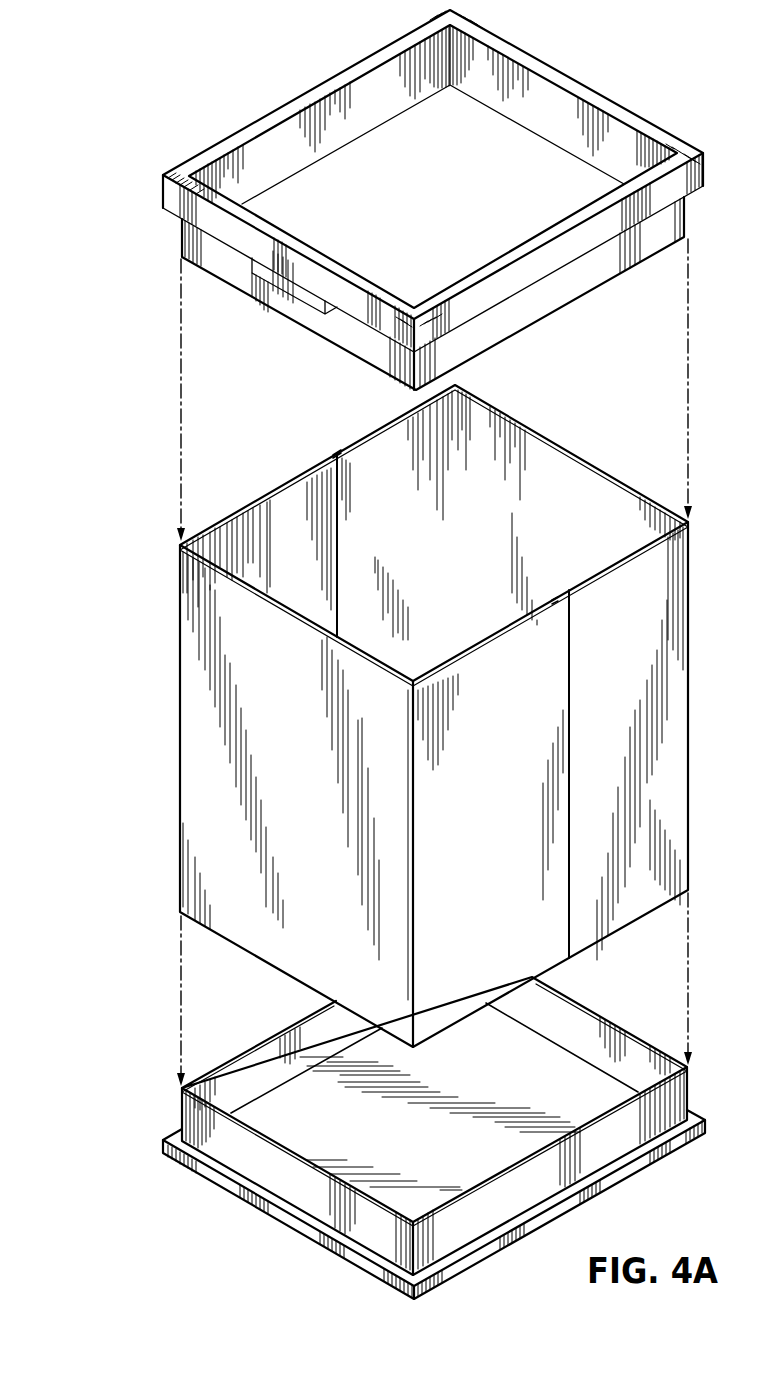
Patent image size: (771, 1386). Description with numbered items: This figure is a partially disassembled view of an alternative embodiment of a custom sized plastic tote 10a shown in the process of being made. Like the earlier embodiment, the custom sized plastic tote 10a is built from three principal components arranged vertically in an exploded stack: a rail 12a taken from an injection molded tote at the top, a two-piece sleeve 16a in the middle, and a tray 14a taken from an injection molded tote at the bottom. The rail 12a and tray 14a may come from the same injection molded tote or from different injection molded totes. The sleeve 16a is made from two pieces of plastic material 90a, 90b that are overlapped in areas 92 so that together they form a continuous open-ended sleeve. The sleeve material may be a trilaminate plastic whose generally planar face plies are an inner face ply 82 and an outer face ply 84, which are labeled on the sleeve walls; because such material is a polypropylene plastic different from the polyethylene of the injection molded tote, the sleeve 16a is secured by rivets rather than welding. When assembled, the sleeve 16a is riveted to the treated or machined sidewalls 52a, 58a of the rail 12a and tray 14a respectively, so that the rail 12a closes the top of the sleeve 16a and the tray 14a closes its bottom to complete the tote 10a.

The custom sized plastic tote 10a is at (93, 89).
The rail 12a is at (256, 111).
The treated or machined sidewall of the rail 52a is at (552, 130).
The two-piece sleeve 16a is at (151, 582).
The piece of plastic material 90a is at (192, 773).
The piece of plastic material 90b is at (588, 458).
The inner face ply 82 is at (328, 577).
The outer face ply 84 is at (609, 754).
The overlap areas 92 is at (330, 447).
The tray 14a is at (166, 1103).
The treated or machined sidewall of the tray 58a is at (277, 1032).